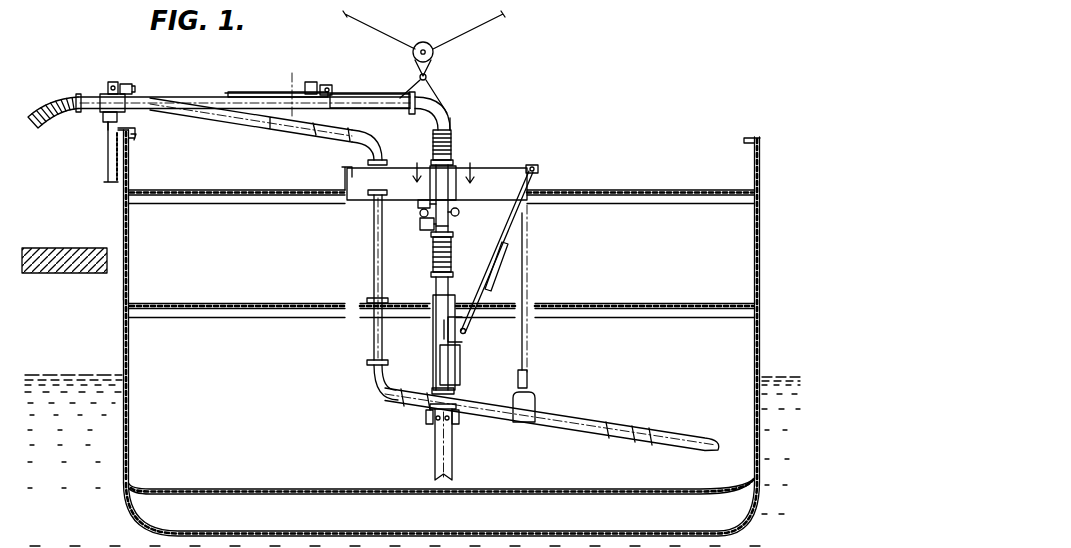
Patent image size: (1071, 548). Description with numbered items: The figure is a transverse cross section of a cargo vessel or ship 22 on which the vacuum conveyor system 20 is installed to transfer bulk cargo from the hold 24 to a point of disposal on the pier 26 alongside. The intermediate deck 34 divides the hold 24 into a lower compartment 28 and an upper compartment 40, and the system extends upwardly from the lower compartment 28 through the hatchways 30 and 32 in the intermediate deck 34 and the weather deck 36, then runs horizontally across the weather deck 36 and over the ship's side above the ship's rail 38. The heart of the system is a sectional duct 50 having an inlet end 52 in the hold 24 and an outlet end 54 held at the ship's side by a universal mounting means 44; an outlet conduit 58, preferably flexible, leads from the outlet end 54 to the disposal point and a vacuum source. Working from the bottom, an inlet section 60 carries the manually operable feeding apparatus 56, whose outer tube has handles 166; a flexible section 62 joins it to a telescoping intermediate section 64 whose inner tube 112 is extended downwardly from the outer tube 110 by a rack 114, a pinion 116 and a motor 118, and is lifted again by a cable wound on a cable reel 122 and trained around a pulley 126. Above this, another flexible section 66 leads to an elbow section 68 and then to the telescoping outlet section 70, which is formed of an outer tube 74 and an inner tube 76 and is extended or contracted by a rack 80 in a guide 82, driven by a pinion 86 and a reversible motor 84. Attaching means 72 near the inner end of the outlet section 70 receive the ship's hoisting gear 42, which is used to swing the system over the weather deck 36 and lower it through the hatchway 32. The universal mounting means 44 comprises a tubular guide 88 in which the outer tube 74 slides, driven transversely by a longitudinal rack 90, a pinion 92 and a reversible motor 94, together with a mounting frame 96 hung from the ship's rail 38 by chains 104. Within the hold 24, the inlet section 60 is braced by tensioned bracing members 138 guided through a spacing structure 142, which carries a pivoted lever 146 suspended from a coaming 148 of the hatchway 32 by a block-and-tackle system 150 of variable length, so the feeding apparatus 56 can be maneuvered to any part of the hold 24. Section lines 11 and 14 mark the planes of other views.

The section line 11- 11 is at (443, 178).
The section line / discharge pipe 14 is at (286, 116).
The vacuum conveyor system 20 is at (485, 106).
The cargo vessel or ship 22 is at (114, 443).
The hold 24 is at (140, 492).
The pier 26 is at (50, 248).
The lower compartment 28 is at (125, 465).
The hatchway 30 is at (370, 292).
The hatchway 32 is at (347, 168).
The intermediate deck 34 is at (240, 302).
The weather deck 36 is at (656, 189).
The ship's rail 38 is at (137, 133).
The upper compartment 40 is at (122, 288).
The ship's hoisting gear 42 is at (447, 32).
The universal mounting means 44 is at (98, 143).
The conduit or duct 50 is at (462, 107).
The inlet end 52 is at (455, 391).
The outlet end 54 is at (78, 93).
The inlet means or feeding apparatus 56 is at (463, 459).
The outlet conduit 58 is at (52, 100).
The inlet section 60 is at (427, 361).
The flexible section 62 is at (452, 255).
The telescoping intermediate section 64 is at (451, 166).
The flexible section 66 is at (452, 144).
The elbow section 68 is at (430, 118).
The telescoping outlet section 70 is at (265, 72).
The attaching means 72 is at (404, 94).
The outer tube 74 is at (105, 118).
The inner tube 76 is at (405, 111).
The rack 80 is at (358, 96).
The guide 82 is at (245, 93).
The reversible motor 84 is at (311, 82).
The pinion 86 is at (326, 85).
The tubular guide 88 is at (128, 97).
The longitudinal rack 90 is at (105, 94).
The pinion 92 is at (113, 82).
The reversible motor 94 is at (128, 84).
The mounting frame 96 is at (106, 181).
The chains 104 is at (122, 160).
The outer tube 110 is at (455, 160).
The inner tube 112 is at (450, 224).
The rack 114 is at (424, 230).
The pinion 116 is at (421, 217).
The motor 118 is at (420, 206).
The cable reel 122 is at (460, 212).
The pulley 126 is at (454, 235).
The bracing members 138 is at (432, 317).
The spider or spacing structure 142 is at (474, 341).
The lever 146 is at (478, 305).
The coaming 148 is at (545, 172).
The block-and-tackle system 150 is at (514, 246).
The handles 166 is at (426, 422).